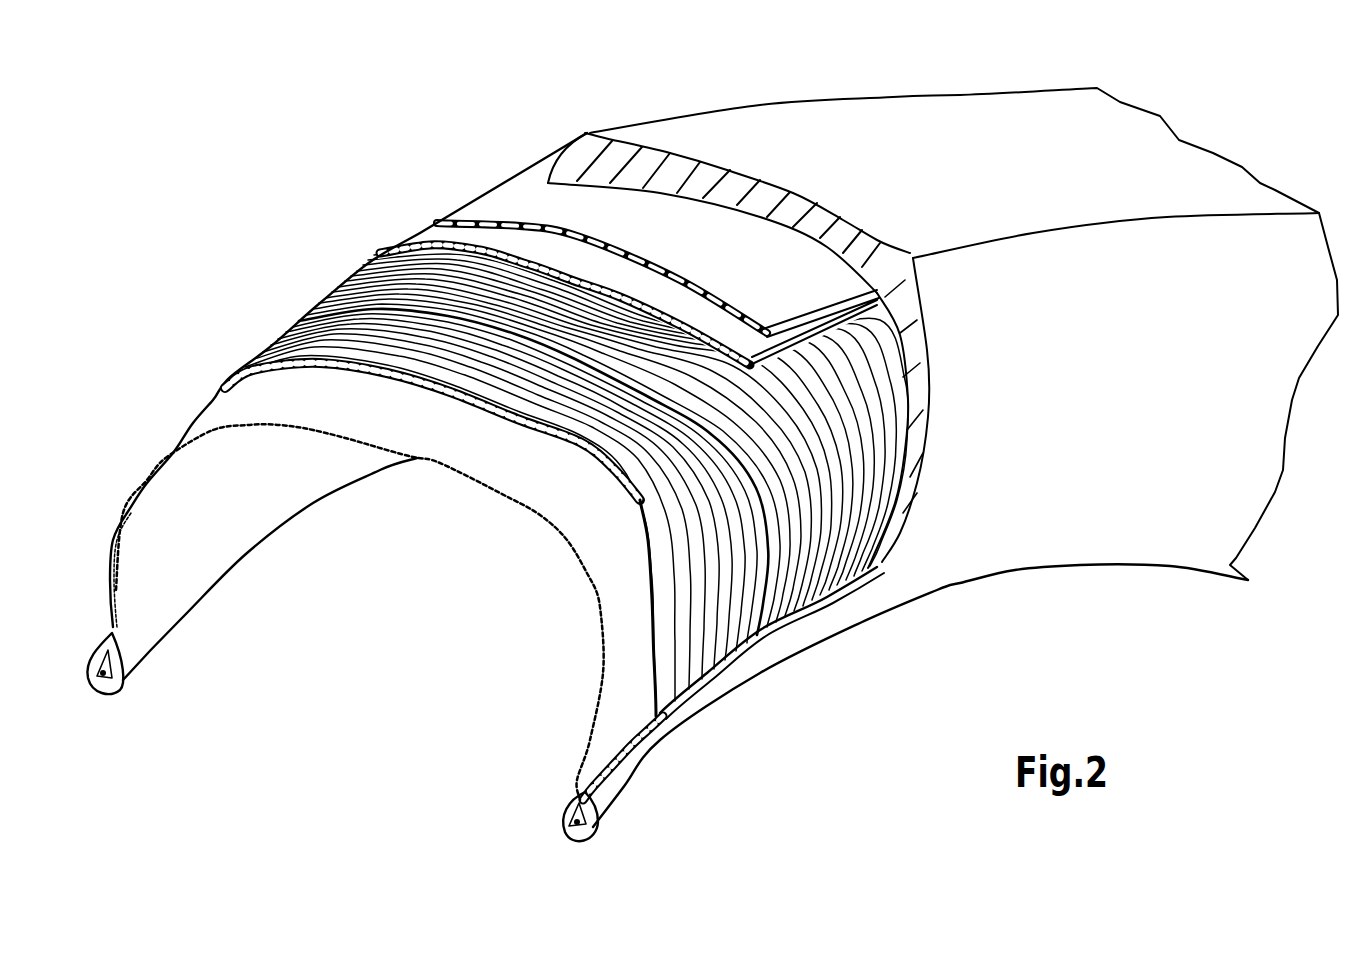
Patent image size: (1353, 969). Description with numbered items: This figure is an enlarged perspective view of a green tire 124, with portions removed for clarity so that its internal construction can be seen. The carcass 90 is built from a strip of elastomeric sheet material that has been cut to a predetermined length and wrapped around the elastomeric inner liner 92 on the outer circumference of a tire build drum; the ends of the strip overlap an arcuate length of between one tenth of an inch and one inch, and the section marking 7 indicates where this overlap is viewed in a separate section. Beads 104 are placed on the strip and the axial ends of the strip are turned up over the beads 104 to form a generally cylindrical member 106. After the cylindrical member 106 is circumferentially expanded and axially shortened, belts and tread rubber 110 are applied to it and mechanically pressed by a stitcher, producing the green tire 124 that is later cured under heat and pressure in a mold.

The green tire 124 is at (773, 86).
The tread rubber 110 is at (917, 143).
The cylindrical member 106 is at (508, 210).
The carcass 90 is at (740, 627).
The elastomeric inner liner 92 is at (600, 640).
The beads 104 is at (123, 682).
The section line 7- 7 is at (613, 327).